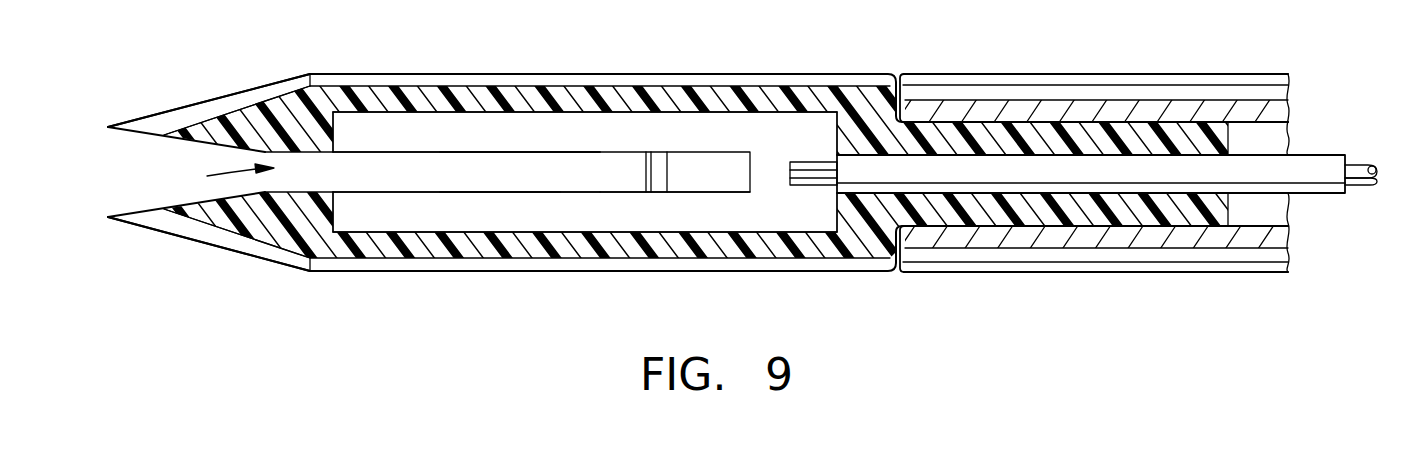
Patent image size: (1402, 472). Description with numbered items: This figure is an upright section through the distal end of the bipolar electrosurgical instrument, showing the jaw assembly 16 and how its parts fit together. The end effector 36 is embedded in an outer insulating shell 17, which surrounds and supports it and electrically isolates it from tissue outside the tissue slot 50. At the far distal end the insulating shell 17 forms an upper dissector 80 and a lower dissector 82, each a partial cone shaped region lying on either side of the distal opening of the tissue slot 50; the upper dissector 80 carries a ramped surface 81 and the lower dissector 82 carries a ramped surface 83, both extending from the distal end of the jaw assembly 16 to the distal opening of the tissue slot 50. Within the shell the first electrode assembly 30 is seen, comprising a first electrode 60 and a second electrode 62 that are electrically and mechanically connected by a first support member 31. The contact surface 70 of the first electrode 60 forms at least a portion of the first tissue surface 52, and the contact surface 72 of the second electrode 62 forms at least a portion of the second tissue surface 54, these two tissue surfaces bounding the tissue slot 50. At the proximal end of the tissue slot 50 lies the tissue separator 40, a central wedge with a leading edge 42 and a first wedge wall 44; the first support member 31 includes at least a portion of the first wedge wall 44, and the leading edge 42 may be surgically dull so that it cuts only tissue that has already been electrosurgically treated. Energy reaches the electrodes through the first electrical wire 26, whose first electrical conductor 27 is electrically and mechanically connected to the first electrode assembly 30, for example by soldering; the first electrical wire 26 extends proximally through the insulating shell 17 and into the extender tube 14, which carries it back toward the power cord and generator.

The extender tube 14 is at (1060, 88).
The jaw assembly 16 is at (498, 76).
The insulating shell 17 is at (630, 243).
The first electrical wire 26 is at (1315, 155).
The first electrical conductor 27 is at (820, 163).
The first electrode assembly 30 is at (767, 213).
The first support member 31 is at (773, 182).
The end effector 36 is at (445, 236).
The tissue separator 40 is at (676, 201).
The leading edge 42 is at (646, 172).
The first wedge wall 44 is at (685, 163).
The tissue slot 50 is at (223, 177).
The first tissue surface 52 is at (514, 153).
The second tissue surface 54 is at (486, 190).
The first electrode 60 is at (388, 141).
The second electrode 62 is at (388, 221).
The contact surface of first electrode 70 is at (400, 153).
The contact surface of second electrode 72 is at (398, 189).
The upper dissector 80 is at (202, 102).
The ramped surface 81 is at (135, 131).
The lower dissector 82 is at (205, 242).
The ramped surface 83 is at (140, 212).